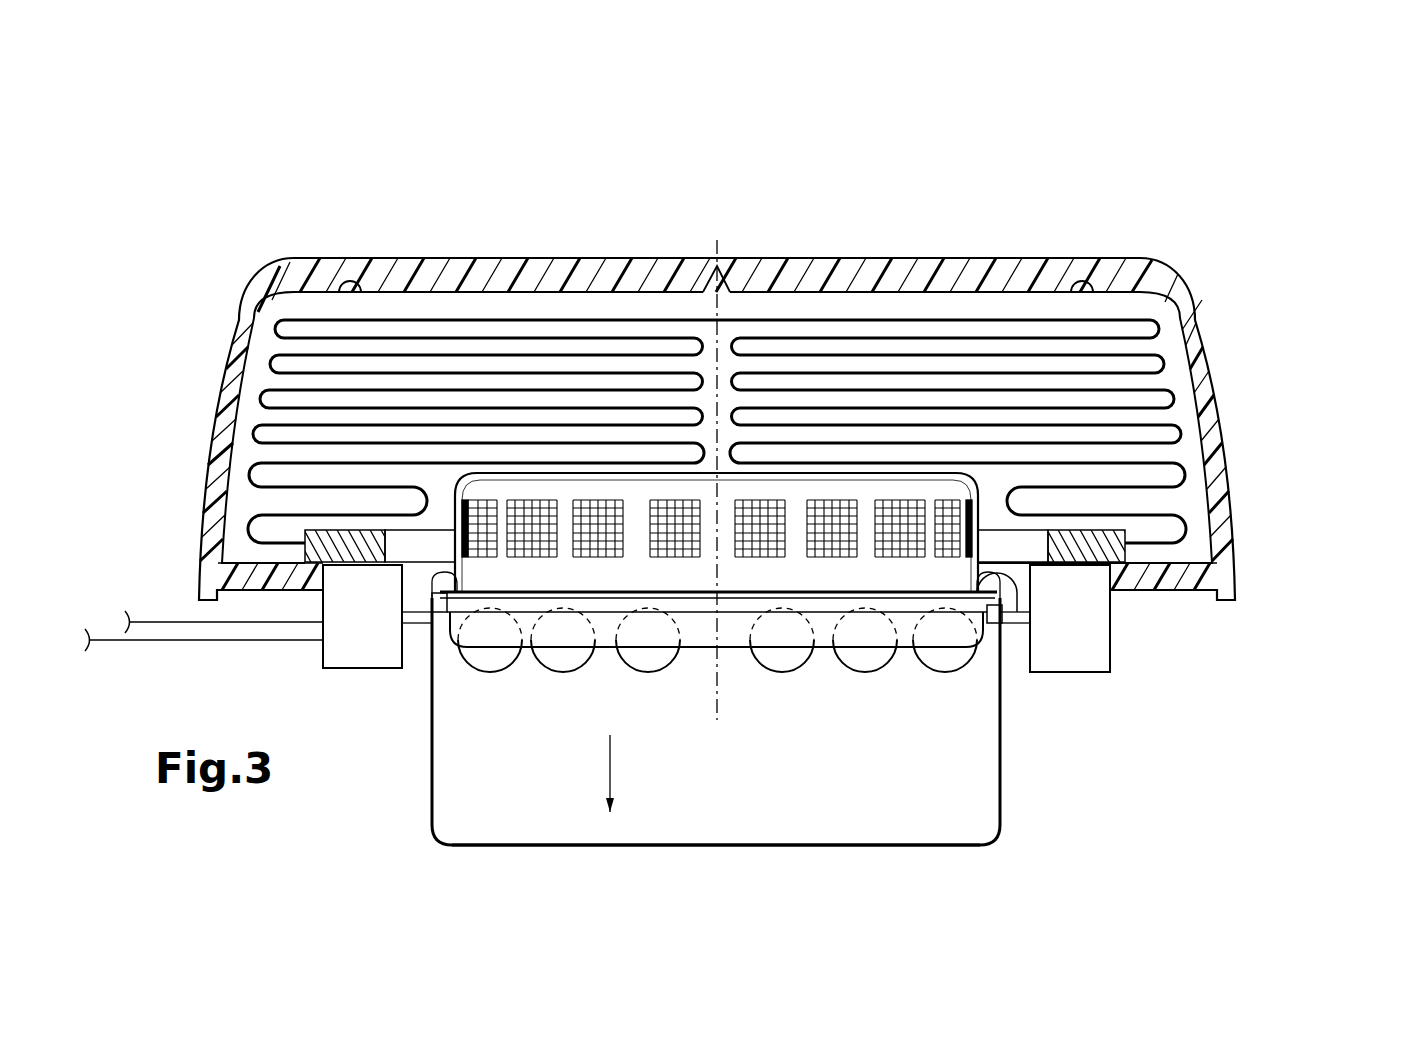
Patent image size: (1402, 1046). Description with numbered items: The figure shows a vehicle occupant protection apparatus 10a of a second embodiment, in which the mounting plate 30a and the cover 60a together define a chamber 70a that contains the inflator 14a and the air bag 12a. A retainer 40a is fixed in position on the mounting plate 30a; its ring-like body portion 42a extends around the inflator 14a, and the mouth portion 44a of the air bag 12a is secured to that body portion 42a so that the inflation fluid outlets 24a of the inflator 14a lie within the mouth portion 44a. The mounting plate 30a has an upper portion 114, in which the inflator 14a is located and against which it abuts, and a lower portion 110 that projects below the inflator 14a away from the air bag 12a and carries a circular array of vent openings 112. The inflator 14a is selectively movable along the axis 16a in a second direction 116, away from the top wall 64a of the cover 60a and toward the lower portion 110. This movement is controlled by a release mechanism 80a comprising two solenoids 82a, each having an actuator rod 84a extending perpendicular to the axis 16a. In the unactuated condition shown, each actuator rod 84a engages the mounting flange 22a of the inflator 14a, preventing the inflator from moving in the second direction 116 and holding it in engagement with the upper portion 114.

The vehicle occupant protection apparatus 10a is at (333, 183).
The air bag 12a is at (1112, 318).
The inflator 14a is at (818, 478).
The axis 16a is at (718, 248).
The mounting flange 22a is at (705, 648).
The inflation fluid outlets 24a is at (590, 515).
The mounting plate 30a is at (1003, 785).
The retainer 40a is at (1130, 525).
The body portion 42a is at (1092, 545).
The mouth portion 44a is at (248, 528).
The cover 60a is at (1020, 262).
The top wall 64a is at (498, 258).
The chamber 70a is at (245, 455).
The release mechanism 80a is at (320, 663).
The solenoids 82a is at (362, 670).
The actuator rod 84a is at (420, 625).
The lower portion 110 is at (1000, 833).
The vent openings 112 is at (470, 670).
The upper portion 114 is at (1014, 600).
The second direction 116 is at (610, 755).